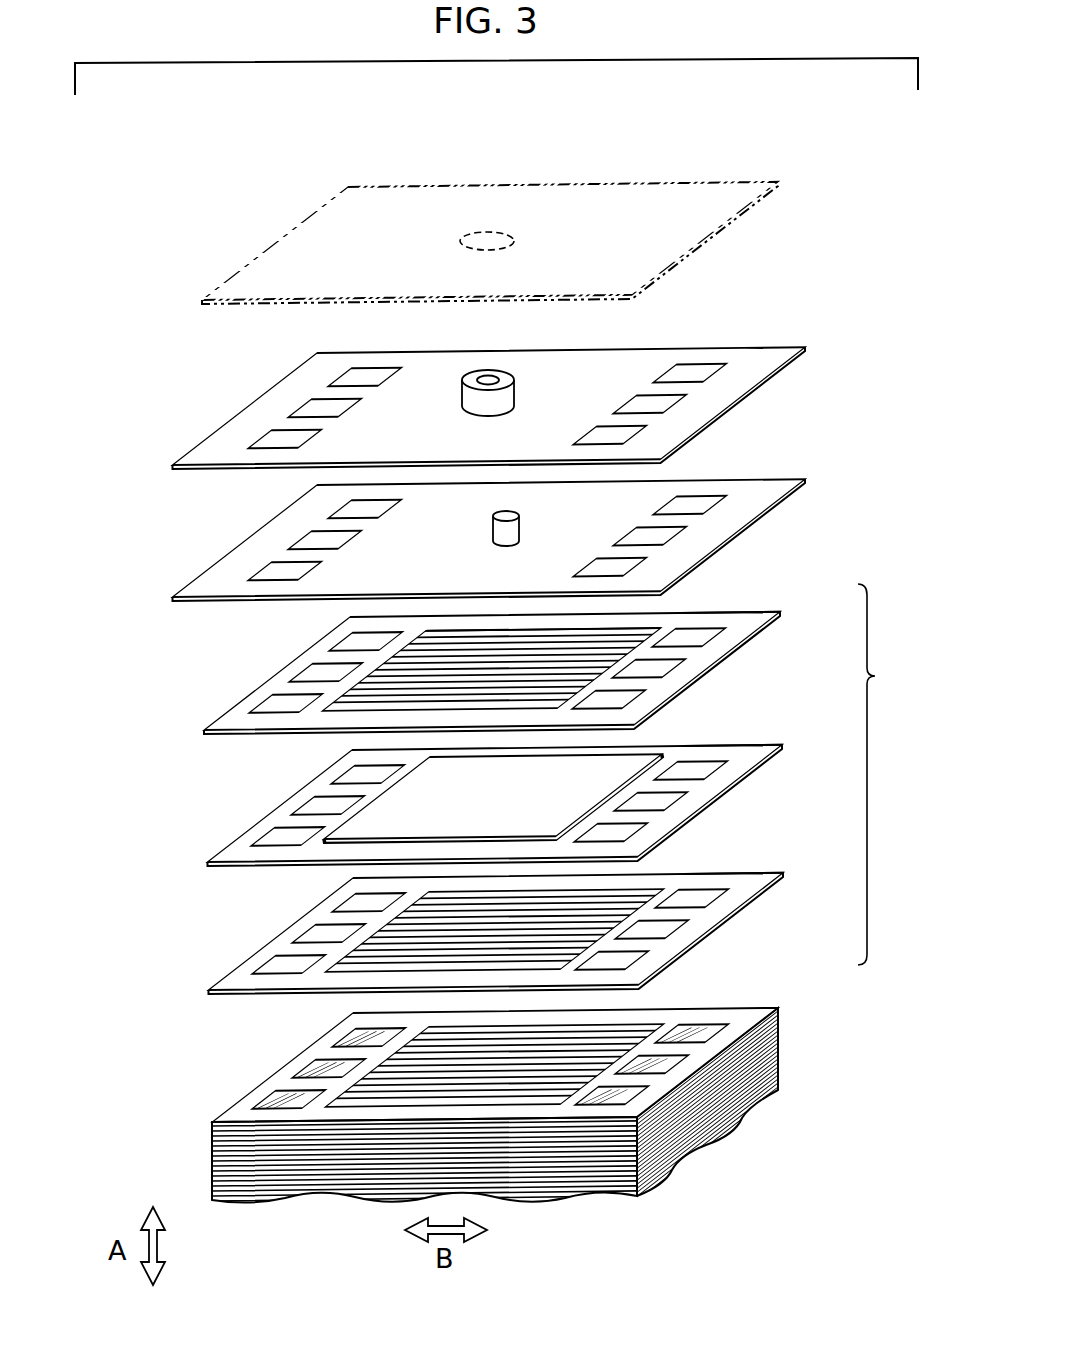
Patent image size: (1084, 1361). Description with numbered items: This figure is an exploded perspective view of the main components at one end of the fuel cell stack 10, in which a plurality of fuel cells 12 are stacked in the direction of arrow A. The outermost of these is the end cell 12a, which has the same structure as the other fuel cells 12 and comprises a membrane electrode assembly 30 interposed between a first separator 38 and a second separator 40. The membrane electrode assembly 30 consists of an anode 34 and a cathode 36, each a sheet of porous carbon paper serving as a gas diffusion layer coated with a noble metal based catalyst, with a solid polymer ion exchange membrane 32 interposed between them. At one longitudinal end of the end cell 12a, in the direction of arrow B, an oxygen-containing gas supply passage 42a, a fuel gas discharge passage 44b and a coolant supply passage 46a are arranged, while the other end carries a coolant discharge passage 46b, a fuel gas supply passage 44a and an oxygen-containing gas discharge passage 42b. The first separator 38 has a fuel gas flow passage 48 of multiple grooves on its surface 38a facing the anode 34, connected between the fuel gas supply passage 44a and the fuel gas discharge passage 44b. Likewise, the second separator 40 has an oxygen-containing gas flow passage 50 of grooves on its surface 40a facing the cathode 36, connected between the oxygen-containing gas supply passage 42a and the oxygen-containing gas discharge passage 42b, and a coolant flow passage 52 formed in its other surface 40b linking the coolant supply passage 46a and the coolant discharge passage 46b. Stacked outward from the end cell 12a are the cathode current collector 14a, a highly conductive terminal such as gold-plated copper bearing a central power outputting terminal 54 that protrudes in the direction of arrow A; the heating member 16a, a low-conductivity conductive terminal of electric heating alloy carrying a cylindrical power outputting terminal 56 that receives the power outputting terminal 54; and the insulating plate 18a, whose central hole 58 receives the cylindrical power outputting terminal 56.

The fuel cell stack 10 is at (187, 207).
The fuel cells 12 is at (784, 1014).
The end cell 12a is at (535, 903).
The cathode current collector 14a is at (535, 527).
The heating member 16a is at (535, 393).
The insulating plate 18a is at (490, 219).
The membrane electrode assembly 30 is at (498, 935).
The solid polymer ion exchange membrane 32 is at (750, 750).
The anode 34 is at (358, 847).
The cathode 36 is at (628, 768).
The first separator 38 is at (504, 937).
The surface of first separator 38a is at (758, 880).
The second separator 40 is at (510, 903).
The surface of second separator 40a is at (363, 718).
The surface of second separator 40b is at (728, 622).
The oxygen-containing gas supply passage 42a is at (356, 901).
The oxygen-containing gas discharge passage 42b is at (641, 963).
The fuel gas supply passage 44a is at (670, 932).
The fuel gas discharge passage 44b is at (323, 931).
The coolant supply passage 46a is at (278, 961).
The coolant discharge passage 46b is at (702, 903).
The fuel gas flow passage 48 is at (365, 975).
The oxygen-containing gas flow passage 50 is at (463, 640).
The coolant flow passage 52 is at (505, 655).
The power outputting terminal 54 is at (519, 530).
The cylindrical power outputting terminal 56 is at (514, 396).
The hole 58 is at (514, 240).